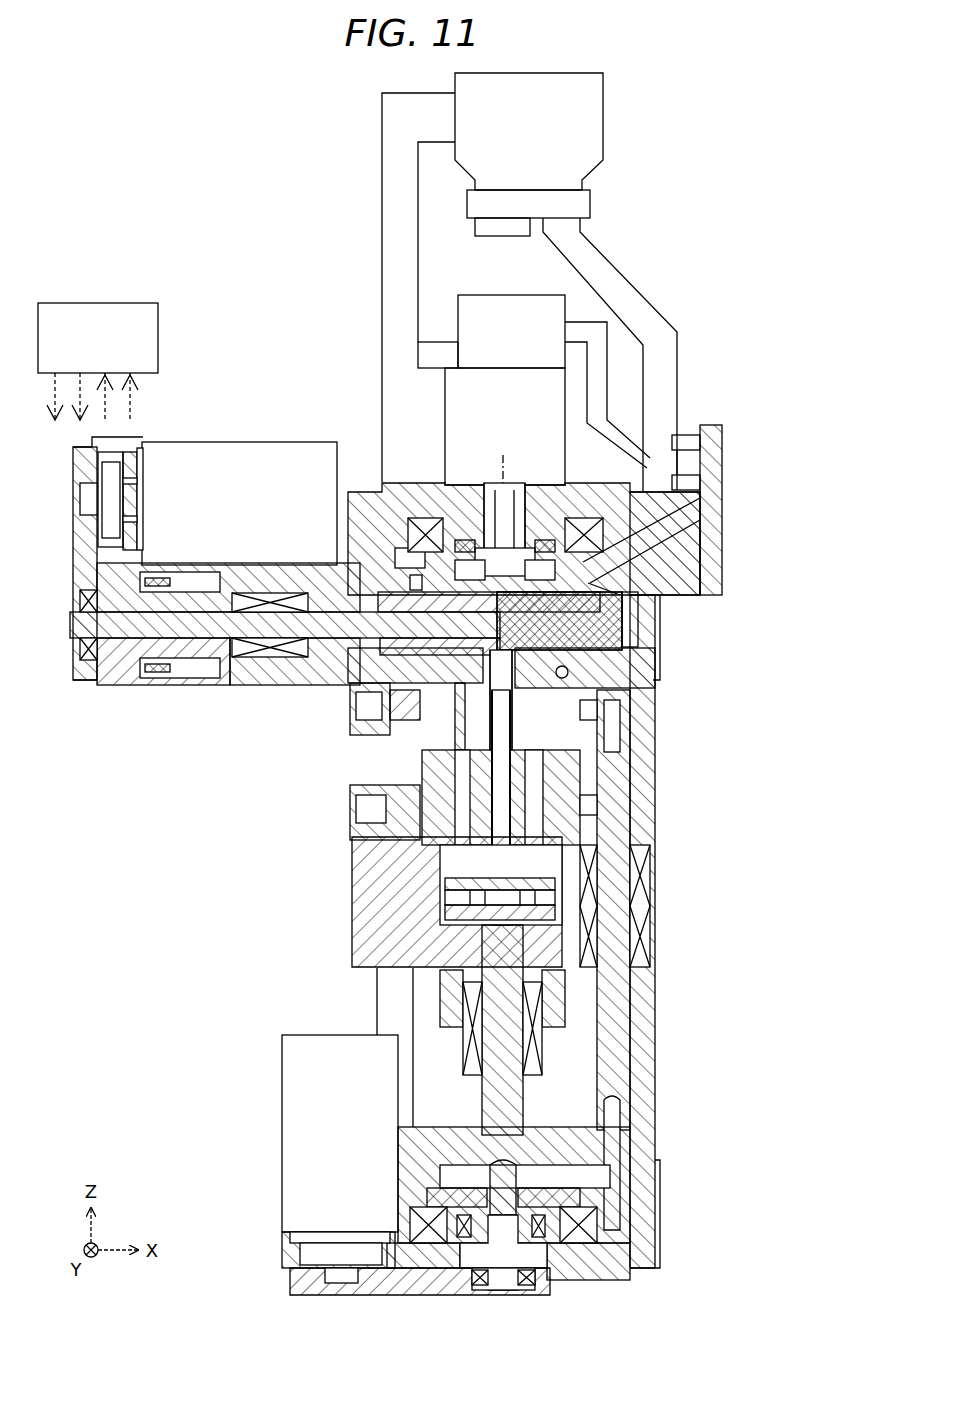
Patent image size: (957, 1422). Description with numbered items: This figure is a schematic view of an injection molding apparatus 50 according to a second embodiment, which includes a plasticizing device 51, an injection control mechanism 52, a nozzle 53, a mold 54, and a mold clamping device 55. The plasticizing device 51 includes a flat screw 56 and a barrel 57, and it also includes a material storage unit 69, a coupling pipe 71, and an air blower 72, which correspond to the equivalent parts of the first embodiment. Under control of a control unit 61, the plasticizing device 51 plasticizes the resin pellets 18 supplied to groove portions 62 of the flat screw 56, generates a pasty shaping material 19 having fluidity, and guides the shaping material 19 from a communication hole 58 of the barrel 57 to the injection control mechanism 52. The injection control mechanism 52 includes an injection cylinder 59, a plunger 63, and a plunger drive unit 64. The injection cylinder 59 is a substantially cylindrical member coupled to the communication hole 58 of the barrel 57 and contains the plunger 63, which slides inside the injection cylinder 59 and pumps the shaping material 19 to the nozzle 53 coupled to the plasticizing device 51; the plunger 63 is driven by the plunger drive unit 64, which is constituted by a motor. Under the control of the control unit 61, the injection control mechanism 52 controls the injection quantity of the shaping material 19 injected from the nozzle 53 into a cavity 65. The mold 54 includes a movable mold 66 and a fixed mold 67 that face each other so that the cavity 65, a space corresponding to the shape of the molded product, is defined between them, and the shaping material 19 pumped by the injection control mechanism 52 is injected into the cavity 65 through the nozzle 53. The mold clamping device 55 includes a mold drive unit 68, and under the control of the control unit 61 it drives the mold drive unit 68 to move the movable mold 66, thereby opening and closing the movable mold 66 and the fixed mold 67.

The injection molding apparatus 50 is at (741, 126).
The material storage unit 69 is at (626, 73).
The air blower 72 is at (503, 295).
The coupling pipe 71 is at (730, 235).
The control unit 61 is at (160, 335).
The plunger drive unit 64 is at (232, 441).
The plasticizing device 51 is at (357, 440).
The flat screw 56 is at (419, 530).
The resin pellets 18 is at (662, 521).
The groove portions 62 is at (625, 598).
The barrel 57 is at (622, 616).
The communication hole 58 is at (622, 648).
The shaping material 19 is at (640, 648).
The plunger 63 is at (188, 686).
The injection cylinder 59 is at (343, 683).
The fixed mold 67 is at (415, 747).
The movable mold 66 is at (415, 776).
The injection control mechanism 52 is at (218, 742).
The mold 54 is at (297, 797).
The nozzle 53 is at (605, 712).
The cavity 65 is at (512, 775).
The mold clamping device 55 is at (320, 1028).
The mold drive unit 68 is at (282, 1136).